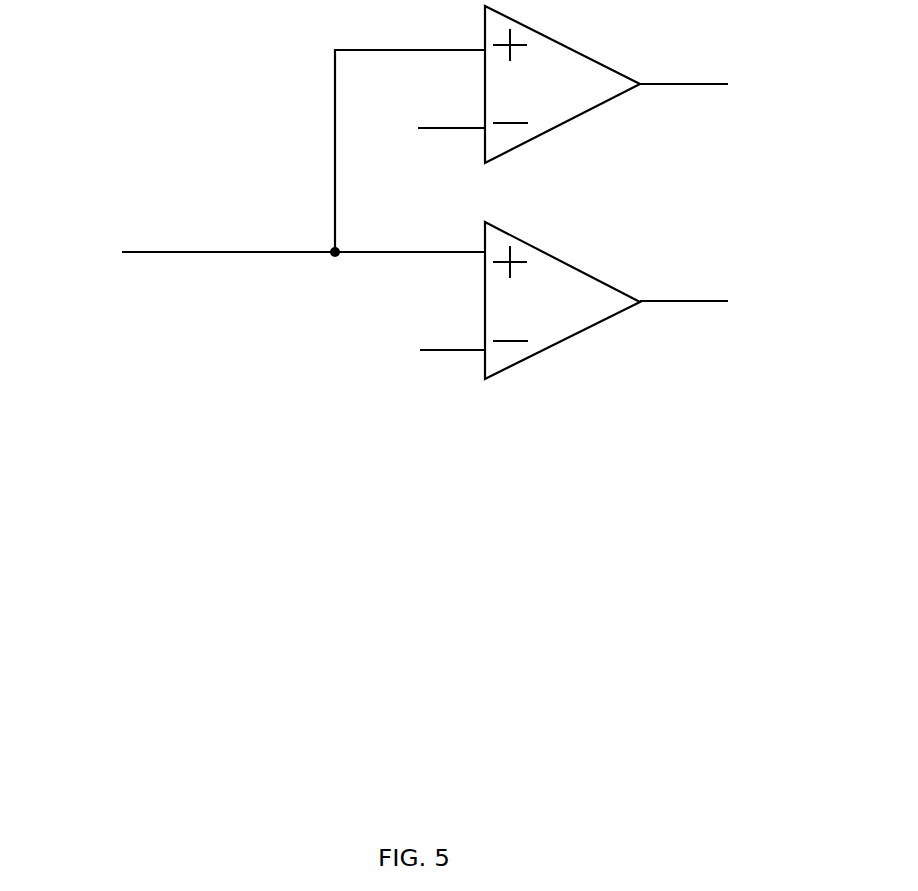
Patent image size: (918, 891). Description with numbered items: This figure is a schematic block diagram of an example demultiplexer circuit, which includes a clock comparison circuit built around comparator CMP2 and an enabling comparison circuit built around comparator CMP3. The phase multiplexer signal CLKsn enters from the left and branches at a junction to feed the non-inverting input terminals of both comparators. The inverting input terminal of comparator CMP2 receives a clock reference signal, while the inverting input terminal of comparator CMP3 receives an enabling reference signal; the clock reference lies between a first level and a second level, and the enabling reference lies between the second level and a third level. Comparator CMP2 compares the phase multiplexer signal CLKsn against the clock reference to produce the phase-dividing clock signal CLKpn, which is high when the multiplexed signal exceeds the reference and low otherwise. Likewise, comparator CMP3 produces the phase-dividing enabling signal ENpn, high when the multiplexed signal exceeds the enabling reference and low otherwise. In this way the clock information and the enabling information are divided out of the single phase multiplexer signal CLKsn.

The comparator CMP2 is at (606, 84).
The comparator CMP3 is at (606, 300).
The phase multiplexer signal CLKsn is at (257, 156).
The phase-dividing clock signal CLKpn is at (776, 88).
The phase-dividing enabling signal ENpn is at (772, 303).